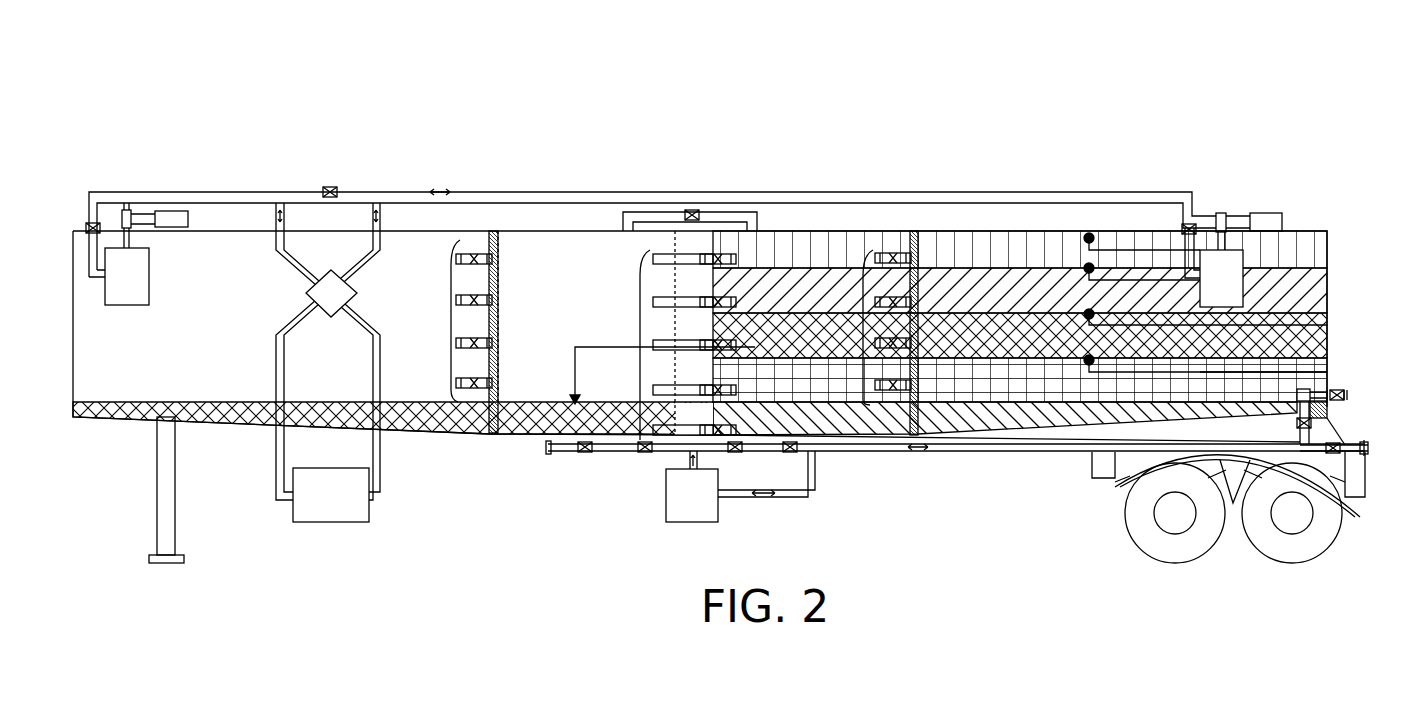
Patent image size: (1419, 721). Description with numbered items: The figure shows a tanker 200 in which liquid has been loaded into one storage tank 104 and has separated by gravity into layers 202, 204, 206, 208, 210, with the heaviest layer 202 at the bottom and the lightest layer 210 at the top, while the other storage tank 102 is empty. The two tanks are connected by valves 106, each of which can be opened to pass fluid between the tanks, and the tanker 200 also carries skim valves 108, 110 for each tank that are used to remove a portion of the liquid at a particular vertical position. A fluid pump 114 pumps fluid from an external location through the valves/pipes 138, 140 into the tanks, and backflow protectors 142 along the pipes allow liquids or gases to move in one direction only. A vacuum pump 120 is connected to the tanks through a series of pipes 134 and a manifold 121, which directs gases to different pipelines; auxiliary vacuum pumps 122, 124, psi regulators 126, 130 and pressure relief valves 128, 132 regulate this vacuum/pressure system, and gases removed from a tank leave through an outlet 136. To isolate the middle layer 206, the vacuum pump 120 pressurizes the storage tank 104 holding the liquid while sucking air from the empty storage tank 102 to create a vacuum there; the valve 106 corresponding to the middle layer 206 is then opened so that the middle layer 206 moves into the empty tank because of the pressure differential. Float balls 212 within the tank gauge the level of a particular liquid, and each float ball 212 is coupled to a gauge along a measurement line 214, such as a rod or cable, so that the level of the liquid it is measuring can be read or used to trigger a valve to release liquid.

The tanker 200 is at (128, 95).
The storage tank 102 is at (186, 331).
The storage tank 104 is at (993, 434).
The valve 106 is at (638, 326).
The skim valve 108 is at (449, 323).
The skim valve 110 is at (862, 326).
The fluid pump 114 is at (682, 518).
The vacuum pump 120 is at (321, 517).
The manifold 121 is at (320, 300).
The auxiliary vacuum pump 122 is at (113, 285).
The auxiliary vacuum pump 124 is at (1207, 287).
The psi regulator 126 is at (127, 209).
The pressure relief valve 128 is at (181, 228).
The psi regulator 130 is at (1222, 212).
The pressure relief valve 132 is at (1273, 214).
The pipe 134 is at (497, 201).
The outlet 136 is at (758, 222).
The valve/pipe 138 is at (1350, 392).
The valve/pipe 140 is at (1372, 446).
The backflow protector 142 is at (585, 453).
The layer 202 is at (954, 427).
The layer 204 is at (954, 389).
The middle layer 206 is at (518, 429).
The layer 208 is at (954, 302).
The layer 210 is at (954, 261).
The float ball 212 is at (1097, 357).
The measurement line 214 is at (1200, 372).